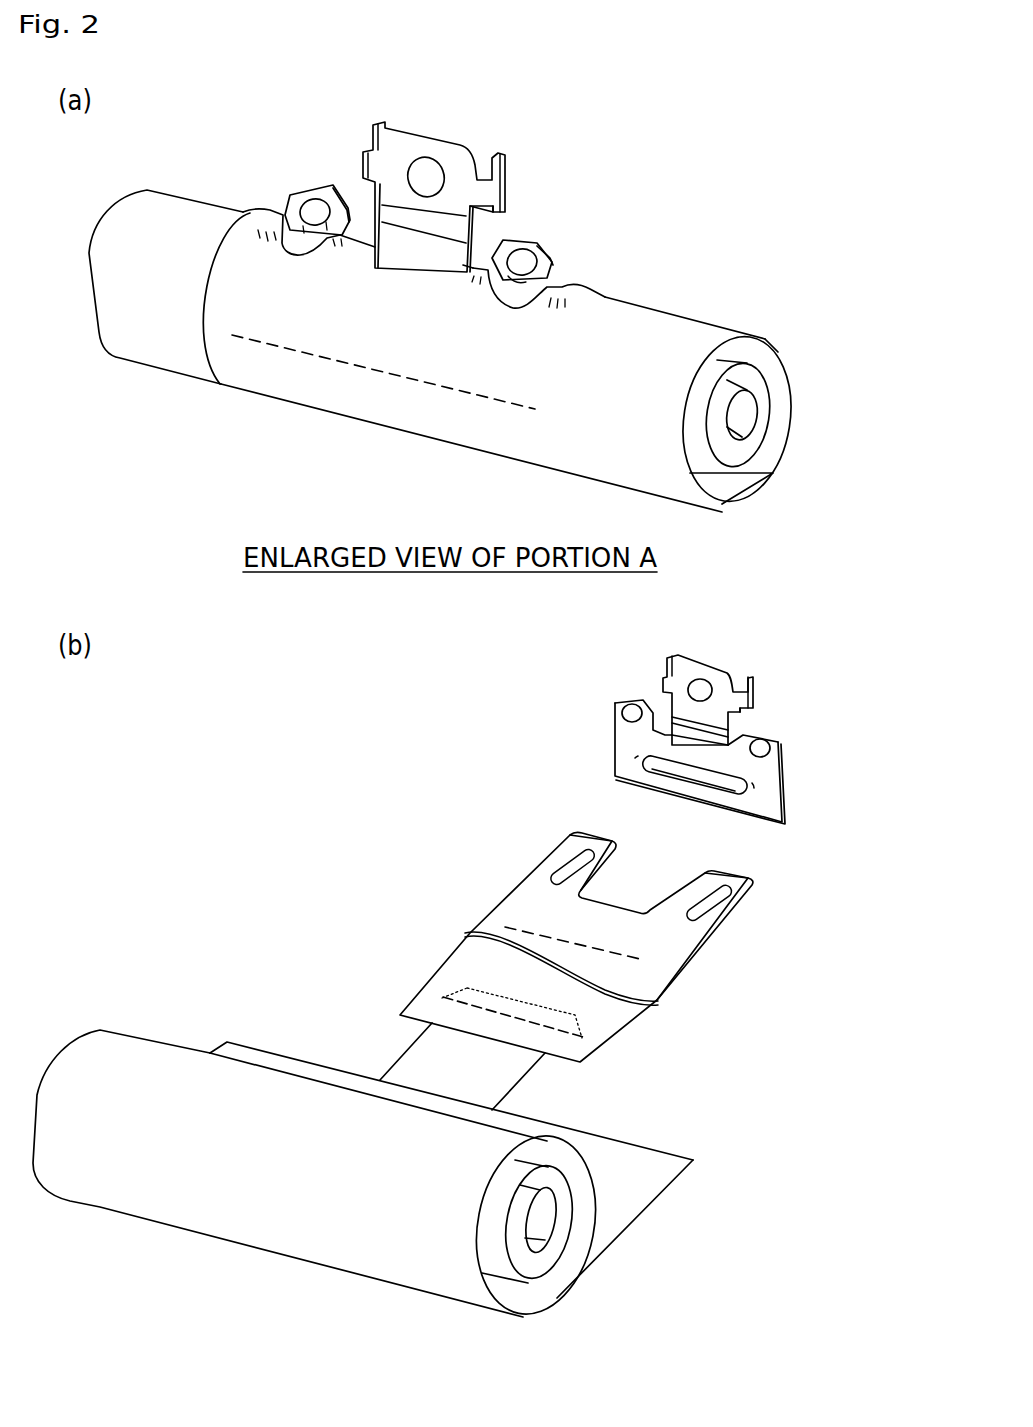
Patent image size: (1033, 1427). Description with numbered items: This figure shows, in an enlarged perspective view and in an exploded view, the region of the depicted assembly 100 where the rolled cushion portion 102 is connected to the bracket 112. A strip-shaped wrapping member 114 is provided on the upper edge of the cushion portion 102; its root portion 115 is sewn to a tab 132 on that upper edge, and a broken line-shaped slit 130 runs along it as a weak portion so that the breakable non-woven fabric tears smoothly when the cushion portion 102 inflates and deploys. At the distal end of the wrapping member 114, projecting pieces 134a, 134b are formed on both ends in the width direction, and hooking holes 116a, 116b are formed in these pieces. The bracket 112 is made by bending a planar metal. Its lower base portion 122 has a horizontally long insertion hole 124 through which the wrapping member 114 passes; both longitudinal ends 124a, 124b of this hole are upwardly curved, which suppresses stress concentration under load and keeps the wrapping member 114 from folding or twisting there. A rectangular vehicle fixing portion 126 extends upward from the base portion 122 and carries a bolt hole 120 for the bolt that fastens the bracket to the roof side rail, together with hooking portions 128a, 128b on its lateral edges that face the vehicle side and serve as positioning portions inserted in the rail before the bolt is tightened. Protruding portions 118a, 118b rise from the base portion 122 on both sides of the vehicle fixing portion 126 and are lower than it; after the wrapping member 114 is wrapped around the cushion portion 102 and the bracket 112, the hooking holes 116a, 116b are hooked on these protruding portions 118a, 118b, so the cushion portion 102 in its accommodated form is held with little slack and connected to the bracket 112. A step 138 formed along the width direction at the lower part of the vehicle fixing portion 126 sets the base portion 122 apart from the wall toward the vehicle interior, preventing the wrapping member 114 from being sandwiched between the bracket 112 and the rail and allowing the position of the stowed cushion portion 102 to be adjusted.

The electronic device 100 is at (189, 155).
The cushion portion 102 is at (692, 335).
The bracket 112 is at (463, 143).
The wrapping member 114 is at (513, 462).
The root portion 115 is at (417, 1008).
The hooking hole 116a is at (276, 219).
The hooking hole 116b is at (540, 282).
The protruding portion 118a is at (316, 187).
The protruding portion 118b is at (545, 247).
The bolt hole 120 is at (428, 160).
The base portion 122 is at (768, 776).
The insertion hole 124 is at (727, 800).
The end of insertion hole 124a is at (643, 754).
The end of insertion hole 124b is at (752, 790).
The vehicle fixing portion 126 is at (473, 213).
The hooking portion 128a is at (380, 122).
The hooking portion 128b is at (507, 157).
The slit 130 is at (247, 337).
The tab 132 is at (525, 1077).
The projecting piece 134a is at (240, 217).
The projecting piece 134b is at (588, 302).
The step 138 is at (682, 750).